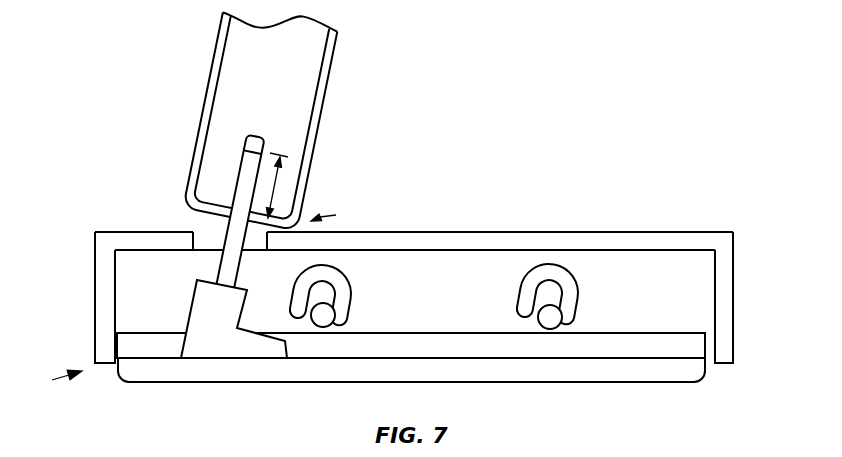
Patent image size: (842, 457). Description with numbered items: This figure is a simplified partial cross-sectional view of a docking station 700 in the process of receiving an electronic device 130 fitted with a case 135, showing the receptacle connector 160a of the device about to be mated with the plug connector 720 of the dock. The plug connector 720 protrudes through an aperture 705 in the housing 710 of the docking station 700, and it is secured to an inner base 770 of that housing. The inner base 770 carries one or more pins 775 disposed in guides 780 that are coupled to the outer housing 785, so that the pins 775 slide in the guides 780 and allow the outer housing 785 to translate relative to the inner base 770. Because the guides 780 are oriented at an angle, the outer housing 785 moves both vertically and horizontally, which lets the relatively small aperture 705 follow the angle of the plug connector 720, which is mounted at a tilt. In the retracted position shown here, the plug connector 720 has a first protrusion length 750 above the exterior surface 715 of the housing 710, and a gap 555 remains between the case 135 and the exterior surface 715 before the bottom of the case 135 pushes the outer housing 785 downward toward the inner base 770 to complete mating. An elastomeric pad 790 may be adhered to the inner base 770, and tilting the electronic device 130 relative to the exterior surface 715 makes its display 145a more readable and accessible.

The electronic device 130 is at (232, 115).
The case 135 is at (201, 128).
The display 145a is at (236, 49).
The receptacle connector 160a is at (241, 162).
The plug connector 720 is at (204, 237).
The first protrusion length 750 is at (284, 177).
The aperture 705 is at (213, 243).
The gap 555 is at (339, 217).
The exterior surface 715 is at (96, 232).
The housing 710 is at (107, 333).
The outer housing 785 is at (718, 330).
The inner base 770 is at (163, 348).
The elastomeric pad 790 is at (223, 370).
The guides 780 is at (347, 293).
The pins 775 is at (325, 319).
The docking station 700 is at (51, 379).